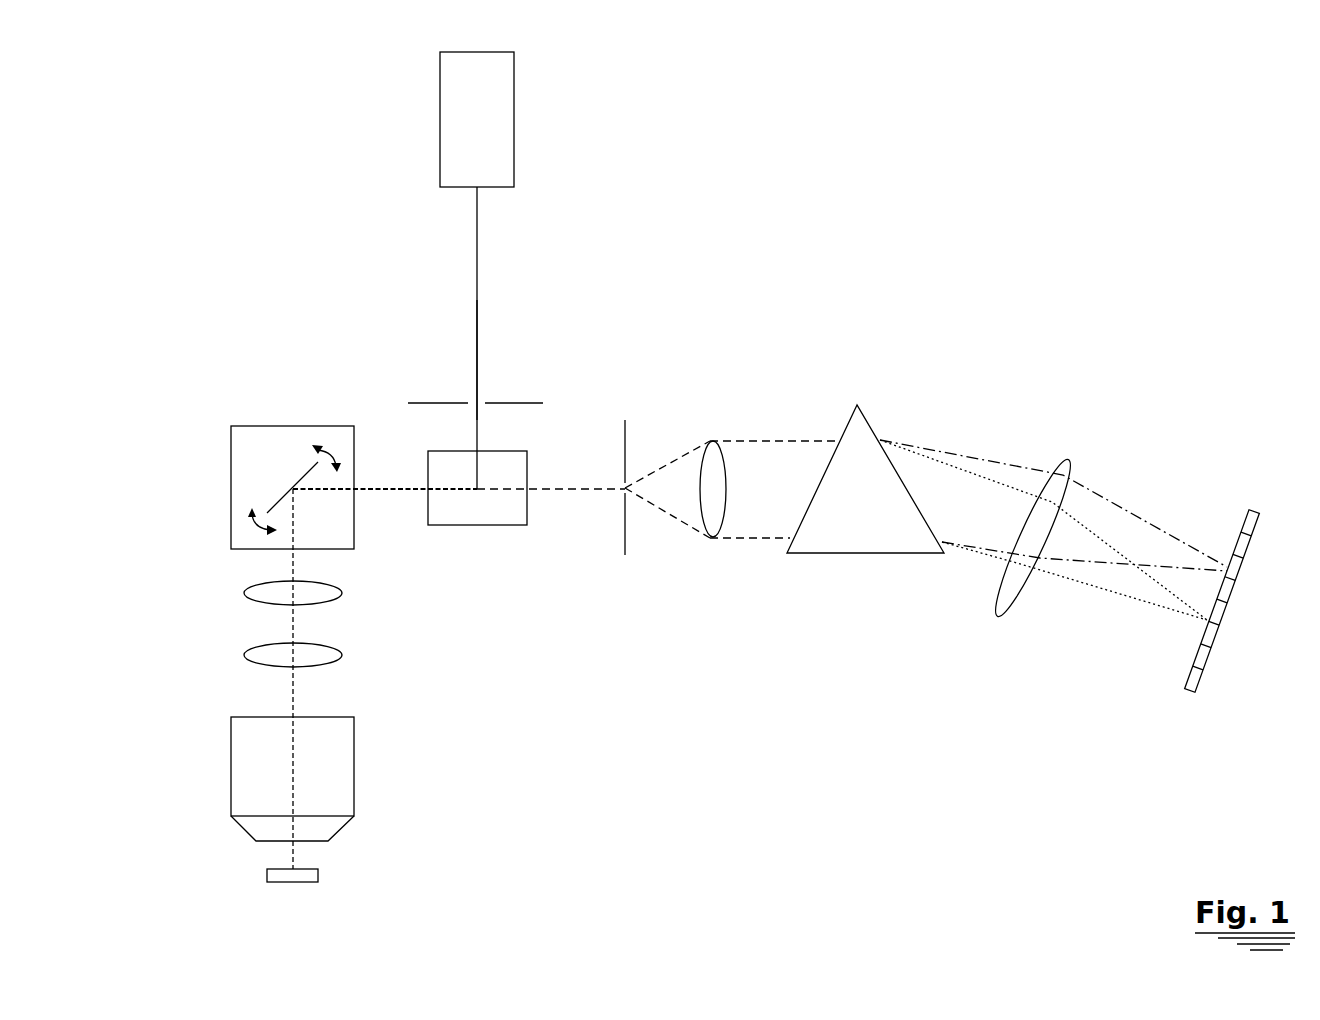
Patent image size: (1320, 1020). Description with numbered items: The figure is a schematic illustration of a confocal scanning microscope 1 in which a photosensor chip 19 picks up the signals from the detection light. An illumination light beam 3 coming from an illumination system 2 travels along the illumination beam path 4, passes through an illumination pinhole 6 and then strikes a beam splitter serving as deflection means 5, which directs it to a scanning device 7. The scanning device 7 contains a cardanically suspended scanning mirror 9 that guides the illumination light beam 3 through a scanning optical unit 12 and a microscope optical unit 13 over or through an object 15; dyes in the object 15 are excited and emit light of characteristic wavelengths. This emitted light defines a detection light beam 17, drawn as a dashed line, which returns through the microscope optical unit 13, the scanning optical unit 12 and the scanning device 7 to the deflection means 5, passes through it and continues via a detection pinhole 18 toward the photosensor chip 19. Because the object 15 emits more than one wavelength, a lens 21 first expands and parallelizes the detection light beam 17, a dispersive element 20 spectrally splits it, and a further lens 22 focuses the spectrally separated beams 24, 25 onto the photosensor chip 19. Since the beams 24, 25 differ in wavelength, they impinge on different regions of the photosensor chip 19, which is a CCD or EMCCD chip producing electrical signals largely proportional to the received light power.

The confocal scanning microscope 1 is at (558, 364).
The illumination system 2 is at (500, 96).
The illumination light beam 3 is at (477, 224).
The illumination beam path 4 is at (477, 368).
The deflection means 5 is at (500, 518).
The illumination pinhole 6 is at (430, 404).
The scanning device 7 is at (256, 447).
The scanning mirror 9 is at (280, 495).
The scanning optical unit 12 is at (268, 591).
The microscope optical unit 13 is at (255, 745).
The object 15 is at (283, 872).
The detection light beam 17 is at (541, 486).
The detection pinhole 18 is at (628, 443).
The photosensor chip 19 is at (1228, 606).
The dispersive element 20 is at (810, 556).
The lens 21 is at (708, 518).
The further lens 22 is at (1000, 604).
The spectrally separated beam 24 is at (1152, 527).
The spectrally separated beam 25 is at (1126, 597).